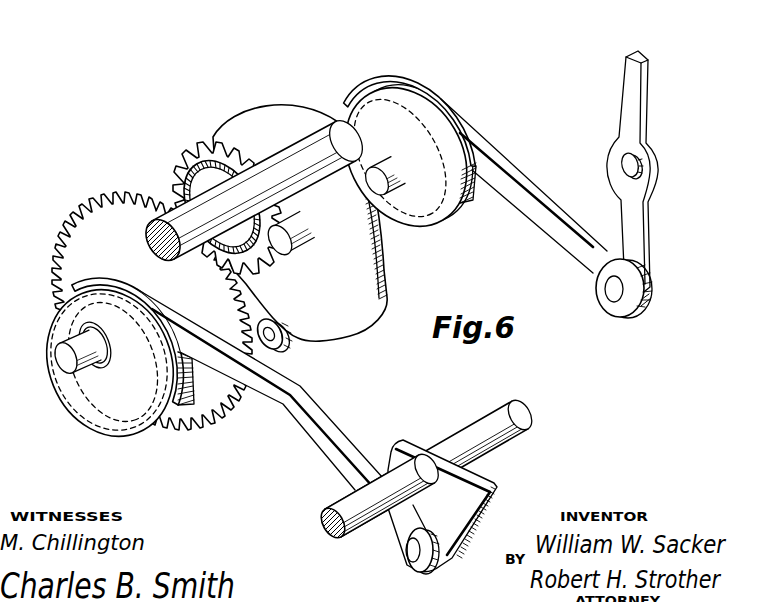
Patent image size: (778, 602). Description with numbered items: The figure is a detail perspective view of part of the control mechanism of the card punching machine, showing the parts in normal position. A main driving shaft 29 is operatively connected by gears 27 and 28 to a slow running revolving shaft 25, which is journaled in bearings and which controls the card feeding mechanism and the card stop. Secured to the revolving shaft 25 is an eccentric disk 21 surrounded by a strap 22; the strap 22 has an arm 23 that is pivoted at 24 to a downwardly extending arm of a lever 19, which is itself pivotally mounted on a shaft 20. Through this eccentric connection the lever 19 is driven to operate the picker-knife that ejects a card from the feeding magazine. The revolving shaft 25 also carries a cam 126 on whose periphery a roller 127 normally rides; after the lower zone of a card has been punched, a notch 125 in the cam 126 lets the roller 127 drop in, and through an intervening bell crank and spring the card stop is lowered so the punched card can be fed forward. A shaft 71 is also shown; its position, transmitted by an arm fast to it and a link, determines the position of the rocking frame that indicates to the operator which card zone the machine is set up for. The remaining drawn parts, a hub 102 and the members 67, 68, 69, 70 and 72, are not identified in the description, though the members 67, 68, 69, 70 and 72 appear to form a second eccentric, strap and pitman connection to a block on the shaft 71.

The lever 19 is at (638, 107).
The shaft 20 is at (640, 165).
The eccentric disk 21 is at (390, 122).
The strap 22 is at (427, 102).
The arm 23 is at (533, 203).
The pivot 24 is at (613, 291).
The revolving shaft 25 is at (389, 171).
The gear 27 is at (197, 143).
The gear 28 is at (152, 311).
The main driving shaft 29 is at (238, 191).
The hub collar 102 is at (200, 180).
The notch 125 is at (387, 252).
The cam 126 is at (300, 223).
The roller 127 is at (285, 347).
The eccentric disc 67 is at (120, 403).
The eccentric strap 68 is at (123, 285).
The pitman 69 is at (328, 457).
The bearing block 70 is at (442, 506).
The shaft 71 is at (473, 430).
The pivot pin 72 is at (408, 553).